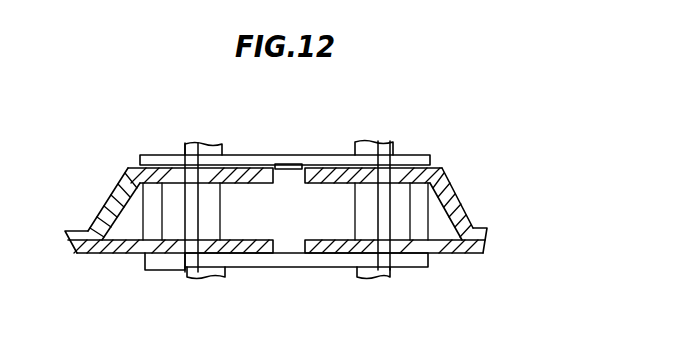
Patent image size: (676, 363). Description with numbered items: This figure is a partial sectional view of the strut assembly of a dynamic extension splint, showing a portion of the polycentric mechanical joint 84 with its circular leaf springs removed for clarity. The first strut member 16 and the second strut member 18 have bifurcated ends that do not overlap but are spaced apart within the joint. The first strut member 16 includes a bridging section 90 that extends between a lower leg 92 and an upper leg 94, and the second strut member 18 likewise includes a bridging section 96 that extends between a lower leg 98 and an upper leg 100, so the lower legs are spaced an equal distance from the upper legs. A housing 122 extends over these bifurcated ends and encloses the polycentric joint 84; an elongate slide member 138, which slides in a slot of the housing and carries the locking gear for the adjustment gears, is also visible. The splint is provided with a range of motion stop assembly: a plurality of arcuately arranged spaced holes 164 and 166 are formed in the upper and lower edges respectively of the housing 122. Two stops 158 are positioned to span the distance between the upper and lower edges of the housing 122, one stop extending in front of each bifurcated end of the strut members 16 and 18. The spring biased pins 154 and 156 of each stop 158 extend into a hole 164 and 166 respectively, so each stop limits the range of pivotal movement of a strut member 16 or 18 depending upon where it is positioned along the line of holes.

The polycentric mechanical joint 84 is at (344, 101).
The upper leg 100 is at (156, 180).
The upper leg 94 is at (430, 167).
The bridging section 96 is at (114, 190).
The bridging section 90 is at (472, 204).
The second strut member 18 is at (77, 258).
The first strut member 16 is at (488, 231).
The lower leg 92 is at (458, 256).
The lower leg 98 is at (155, 256).
The housing 122 is at (325, 157).
The slide member 138 is at (284, 157).
The spring biased pin 154 is at (192, 155).
The spring biased pin 156 is at (186, 271).
The stop 158 is at (198, 207).
The spaced holes 164 is at (204, 166).
The spaced holes 166 is at (207, 277).